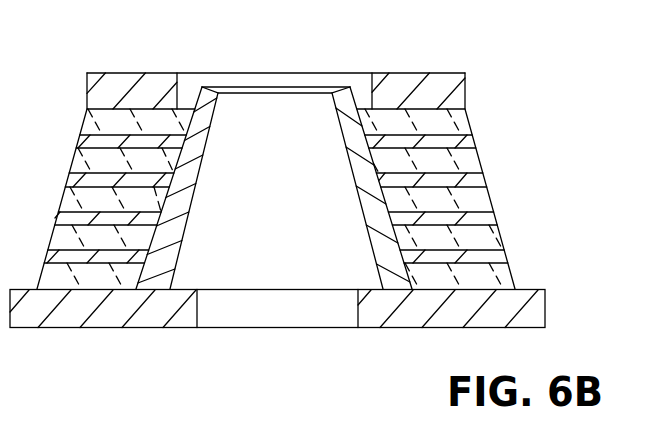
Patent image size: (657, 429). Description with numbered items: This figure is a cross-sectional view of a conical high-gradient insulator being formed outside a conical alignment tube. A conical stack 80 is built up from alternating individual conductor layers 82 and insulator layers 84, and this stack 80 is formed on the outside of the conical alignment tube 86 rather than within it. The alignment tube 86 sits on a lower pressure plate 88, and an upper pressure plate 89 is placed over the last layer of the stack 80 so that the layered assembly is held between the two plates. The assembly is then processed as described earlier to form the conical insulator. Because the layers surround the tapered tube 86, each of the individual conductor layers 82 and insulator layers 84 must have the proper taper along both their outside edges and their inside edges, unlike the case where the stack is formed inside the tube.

The conical stack 80 is at (400, 48).
The conductor layers 82 is at (70, 181).
The insulator layers 84 is at (470, 162).
The conical alignment tube 86 is at (208, 147).
The lower pressure plate 88 is at (100, 328).
The upper pressure plate 89 is at (157, 72).